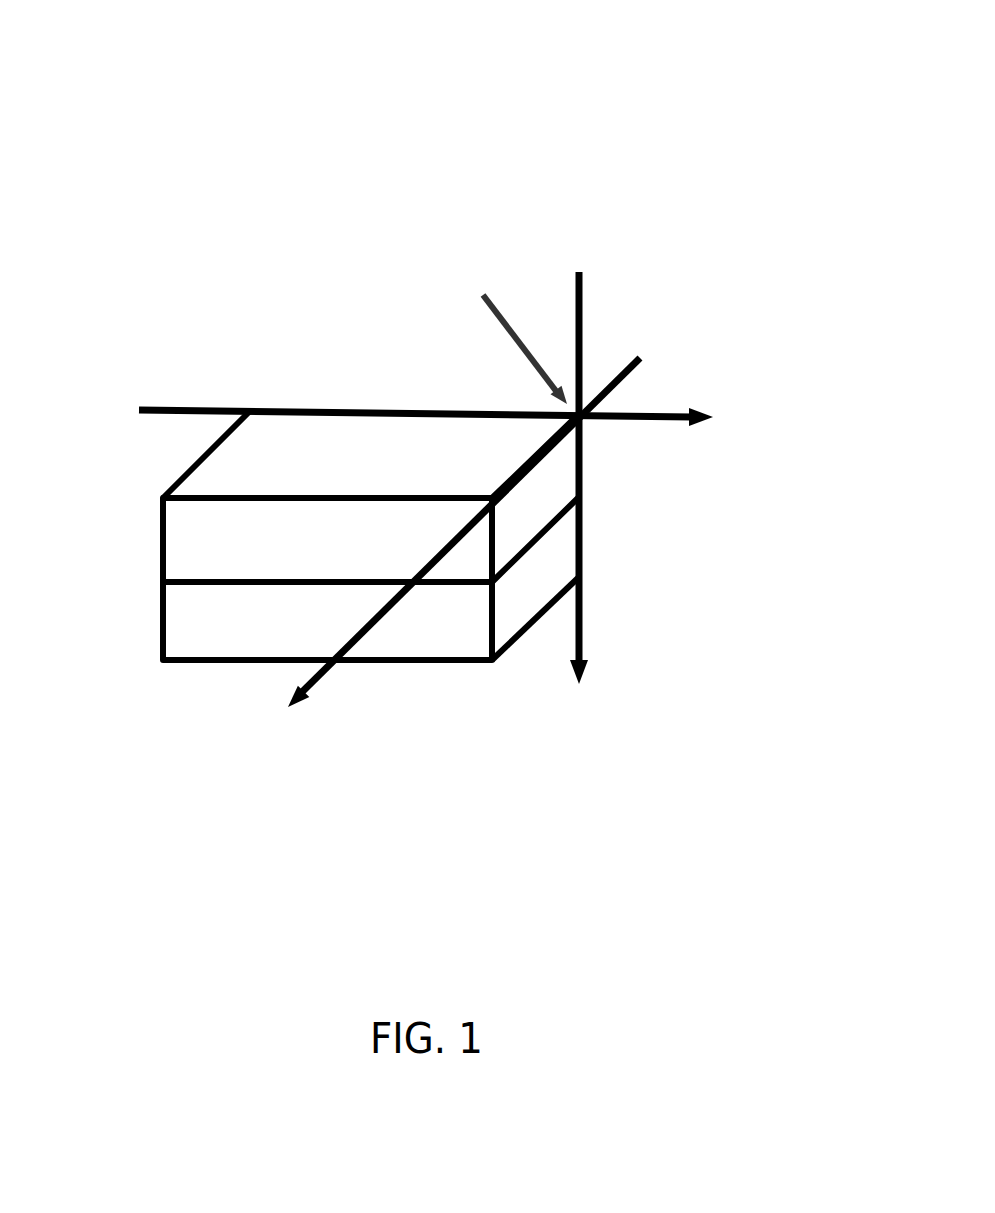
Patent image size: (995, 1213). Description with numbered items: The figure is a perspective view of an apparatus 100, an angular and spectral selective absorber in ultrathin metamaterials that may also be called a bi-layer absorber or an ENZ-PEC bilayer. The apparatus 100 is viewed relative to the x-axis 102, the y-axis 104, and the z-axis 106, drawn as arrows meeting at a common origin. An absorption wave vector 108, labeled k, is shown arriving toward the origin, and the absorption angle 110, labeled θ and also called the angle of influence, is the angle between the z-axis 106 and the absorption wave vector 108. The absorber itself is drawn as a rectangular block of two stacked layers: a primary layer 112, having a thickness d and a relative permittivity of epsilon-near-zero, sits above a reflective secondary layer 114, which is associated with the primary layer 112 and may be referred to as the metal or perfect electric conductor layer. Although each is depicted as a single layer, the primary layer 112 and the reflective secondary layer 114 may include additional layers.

The apparatus 100 is at (457, 445).
The x-axis 102 is at (702, 456).
The y-axis 104 is at (347, 705).
The z-axis 106 is at (622, 686).
The absorption wave vector 108 is at (485, 353).
The absorption angle 110 is at (560, 318).
The primary layer 112 is at (188, 535).
The reflective secondary layer 114 is at (187, 629).